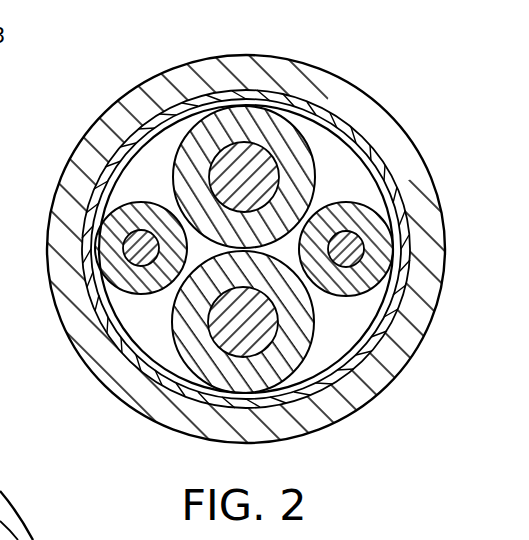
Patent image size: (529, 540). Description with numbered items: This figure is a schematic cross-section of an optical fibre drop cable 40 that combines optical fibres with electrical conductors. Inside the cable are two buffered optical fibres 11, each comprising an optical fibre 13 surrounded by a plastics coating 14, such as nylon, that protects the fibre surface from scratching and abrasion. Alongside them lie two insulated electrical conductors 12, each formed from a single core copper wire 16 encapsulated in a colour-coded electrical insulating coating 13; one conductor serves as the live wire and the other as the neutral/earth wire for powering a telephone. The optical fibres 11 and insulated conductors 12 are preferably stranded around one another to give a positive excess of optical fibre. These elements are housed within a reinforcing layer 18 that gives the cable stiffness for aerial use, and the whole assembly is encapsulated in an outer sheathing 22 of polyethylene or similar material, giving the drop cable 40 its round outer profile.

The optical fibre drop cable 40 is at (248, 243).
The sheathing 22 is at (168, 83).
The shield layer 18 is at (249, 99).
The insulated electrical conductor 12 is at (239, 402).
The single core copper wire 16 is at (287, 125).
The buffered optical fibre 11 is at (248, 231).
The optical fibre 13 is at (97, 242).
The plastics coating 14 is at (128, 262).